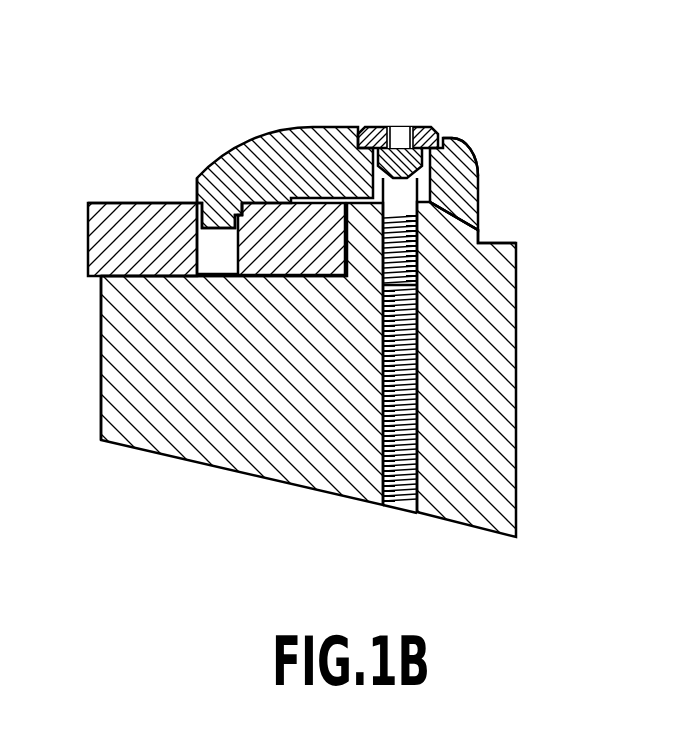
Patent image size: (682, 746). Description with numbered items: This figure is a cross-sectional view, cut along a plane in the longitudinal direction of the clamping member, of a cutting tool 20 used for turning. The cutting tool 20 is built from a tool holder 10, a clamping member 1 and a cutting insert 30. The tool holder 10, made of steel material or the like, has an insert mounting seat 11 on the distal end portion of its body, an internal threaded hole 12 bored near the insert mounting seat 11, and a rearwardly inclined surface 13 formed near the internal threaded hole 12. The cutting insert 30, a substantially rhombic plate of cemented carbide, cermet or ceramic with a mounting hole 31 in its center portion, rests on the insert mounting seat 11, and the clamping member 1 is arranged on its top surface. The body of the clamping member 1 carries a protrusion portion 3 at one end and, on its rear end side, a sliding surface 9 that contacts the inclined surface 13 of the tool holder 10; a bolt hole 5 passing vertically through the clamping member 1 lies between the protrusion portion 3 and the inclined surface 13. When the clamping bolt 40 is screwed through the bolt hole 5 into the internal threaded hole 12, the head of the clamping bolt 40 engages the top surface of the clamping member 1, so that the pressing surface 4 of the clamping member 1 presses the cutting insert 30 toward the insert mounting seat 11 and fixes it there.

The clamping member 1 is at (265, 148).
The protrusion portion 3 is at (195, 181).
The pressing surface 4 is at (246, 205).
The bolt hole 5 is at (470, 155).
The sliding surface 9 is at (448, 191).
The tool holder 10 is at (517, 370).
The insert mounting seat 11 is at (118, 278).
The internal threaded hole 12 is at (423, 291).
The inclined surface 13 is at (462, 227).
The cutting tool 20 is at (186, 467).
The cutting insert 30 is at (118, 203).
The mounting hole 31 is at (197, 247).
The clamping bolt 40 is at (405, 148).